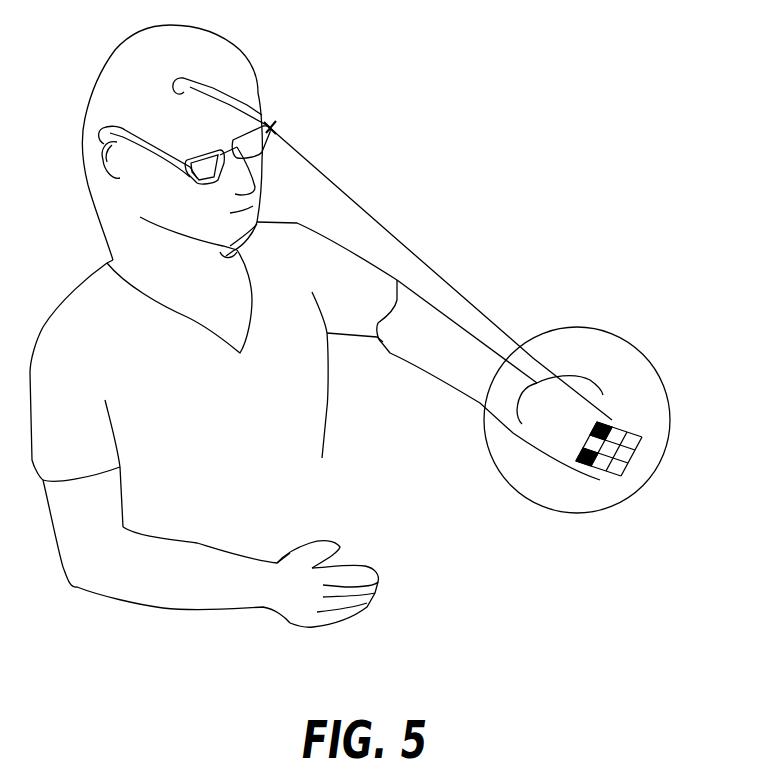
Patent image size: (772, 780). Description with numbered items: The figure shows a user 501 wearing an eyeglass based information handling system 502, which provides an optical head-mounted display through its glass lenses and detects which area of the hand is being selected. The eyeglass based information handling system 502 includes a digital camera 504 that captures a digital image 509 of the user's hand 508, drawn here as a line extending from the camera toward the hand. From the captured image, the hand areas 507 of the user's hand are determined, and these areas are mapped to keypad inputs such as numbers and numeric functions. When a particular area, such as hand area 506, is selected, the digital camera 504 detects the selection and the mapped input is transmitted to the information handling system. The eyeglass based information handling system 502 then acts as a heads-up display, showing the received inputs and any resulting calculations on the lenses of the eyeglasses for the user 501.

The user 501 is at (81, 104).
The eyeglass based information handling system 502 is at (176, 90).
The digital camera 504 is at (272, 130).
The hand area 506 is at (612, 421).
The hand areas 507 is at (636, 418).
The user's hand 508 is at (604, 508).
The digital image 509 is at (497, 322).